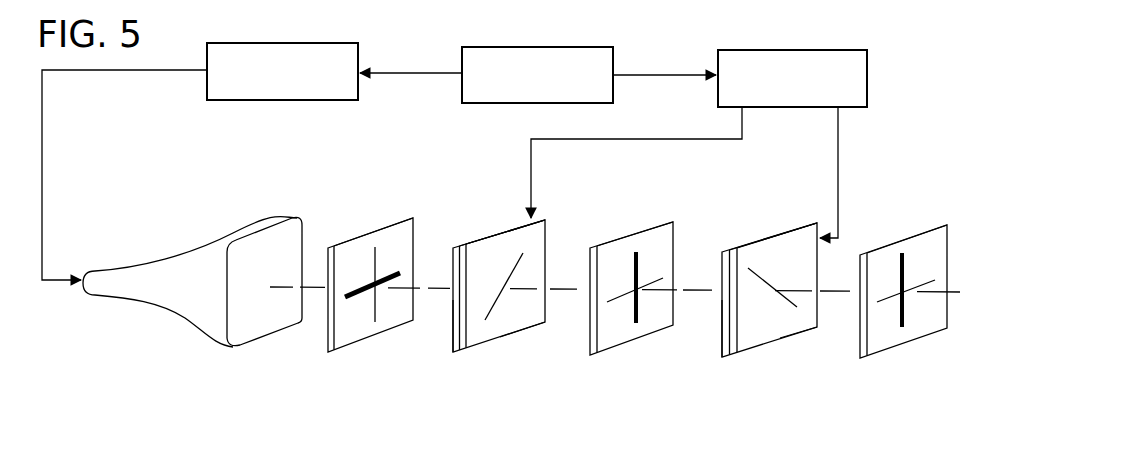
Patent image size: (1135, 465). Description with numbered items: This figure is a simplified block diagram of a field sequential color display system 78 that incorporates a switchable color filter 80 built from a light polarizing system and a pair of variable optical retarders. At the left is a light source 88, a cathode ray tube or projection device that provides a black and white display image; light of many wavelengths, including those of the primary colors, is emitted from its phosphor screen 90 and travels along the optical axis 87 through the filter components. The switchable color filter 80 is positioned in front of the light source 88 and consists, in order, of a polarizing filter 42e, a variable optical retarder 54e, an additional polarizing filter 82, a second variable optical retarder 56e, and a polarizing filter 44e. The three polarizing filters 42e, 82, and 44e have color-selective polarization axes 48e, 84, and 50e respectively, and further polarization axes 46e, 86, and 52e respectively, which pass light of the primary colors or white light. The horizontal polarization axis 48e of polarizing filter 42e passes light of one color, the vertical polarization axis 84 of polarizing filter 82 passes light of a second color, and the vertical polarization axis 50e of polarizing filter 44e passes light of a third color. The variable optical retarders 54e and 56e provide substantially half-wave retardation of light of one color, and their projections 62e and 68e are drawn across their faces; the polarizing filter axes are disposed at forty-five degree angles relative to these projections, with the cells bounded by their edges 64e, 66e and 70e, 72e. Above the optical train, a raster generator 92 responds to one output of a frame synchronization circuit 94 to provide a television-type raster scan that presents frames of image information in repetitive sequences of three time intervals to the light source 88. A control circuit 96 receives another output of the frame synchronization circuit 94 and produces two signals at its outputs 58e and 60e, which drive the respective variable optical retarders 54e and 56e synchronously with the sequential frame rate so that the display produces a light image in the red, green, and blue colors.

The raster generator 92 is at (233, 43).
The frame synchronization circuit 94 is at (577, 47).
The control circuit 96 is at (748, 50).
The field sequential color display system 78 is at (158, 245).
The light source 88 is at (167, 308).
The phosphor screen 90 is at (272, 323).
The optical axis / light beam 87 is at (698, 287).
The output 58e is at (531, 173).
The output 60e is at (838, 143).
The polarizing filter 42e is at (362, 335).
The polarization axis 46e is at (373, 258).
The horizontal polarization axis 48e is at (397, 272).
The variable optical retarder 54e is at (490, 345).
The projection 62e is at (498, 300).
The cell electrode 64e is at (452, 330).
The cell electrode 66e is at (512, 322).
The polarizing filter 82 is at (650, 227).
The vertical polarization axis 84 is at (634, 266).
The polarization axis 86 is at (615, 300).
The variable optical retarder 56e is at (748, 352).
The projection 68e is at (790, 310).
The cell electrode 70e is at (721, 340).
The cell electrode 72e is at (808, 314).
The polarizing filter 44e is at (887, 352).
The vertical polarization axis 50e is at (900, 262).
The polarization axis 52e is at (906, 292).
The switchable color filter 80 is at (583, 362).